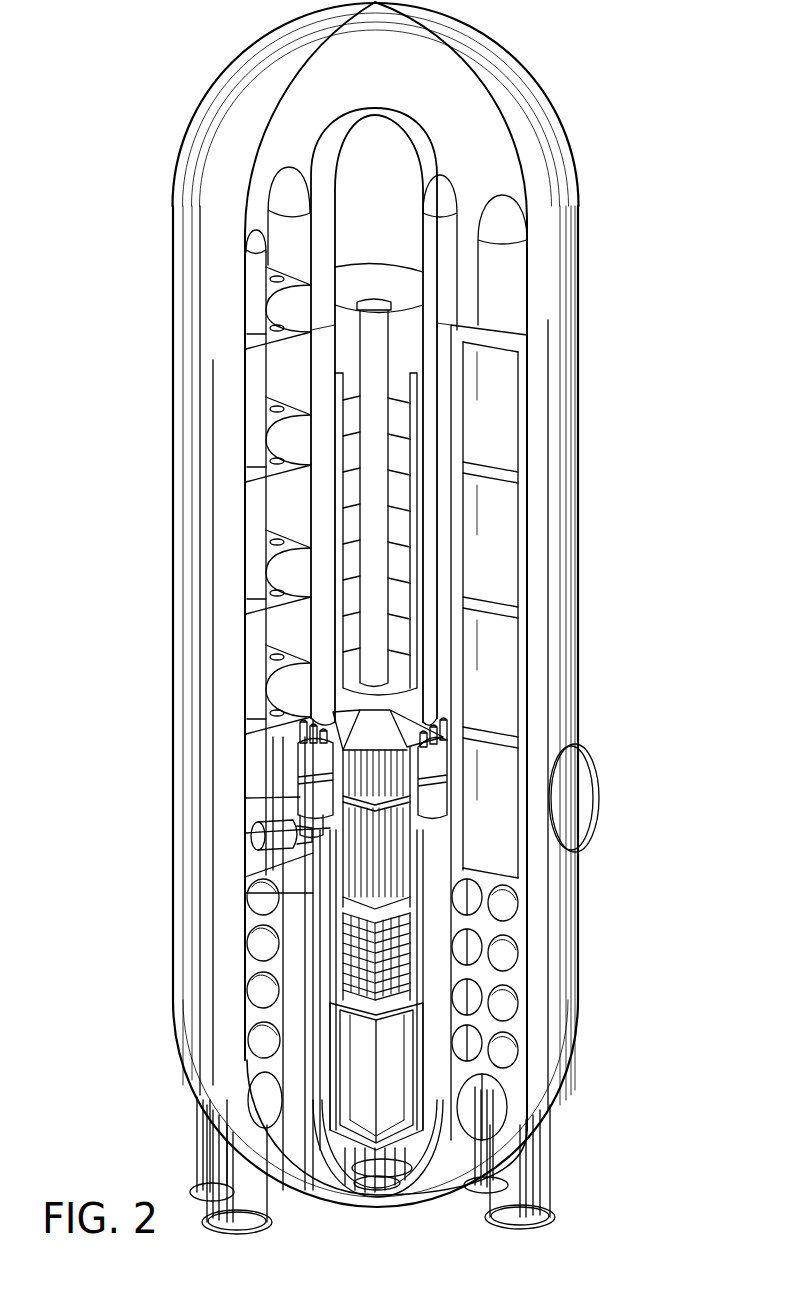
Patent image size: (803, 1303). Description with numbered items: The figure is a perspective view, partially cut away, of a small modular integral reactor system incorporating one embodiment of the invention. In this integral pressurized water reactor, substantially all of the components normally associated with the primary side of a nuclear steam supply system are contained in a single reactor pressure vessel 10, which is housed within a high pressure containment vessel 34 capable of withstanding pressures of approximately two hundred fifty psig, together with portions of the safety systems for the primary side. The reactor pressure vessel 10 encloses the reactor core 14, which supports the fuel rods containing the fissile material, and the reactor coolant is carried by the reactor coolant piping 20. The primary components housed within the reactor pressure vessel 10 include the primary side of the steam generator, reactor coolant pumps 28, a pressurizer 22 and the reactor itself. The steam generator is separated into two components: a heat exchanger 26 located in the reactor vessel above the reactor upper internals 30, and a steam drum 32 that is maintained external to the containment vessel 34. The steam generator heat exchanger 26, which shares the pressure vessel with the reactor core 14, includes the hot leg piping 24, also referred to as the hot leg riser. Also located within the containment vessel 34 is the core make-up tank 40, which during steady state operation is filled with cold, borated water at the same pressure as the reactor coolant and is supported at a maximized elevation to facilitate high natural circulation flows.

The reactor pressure vessel 10 is at (420, 947).
The reactor core 14 is at (393, 1075).
The reactor coolant piping 20 is at (400, 913).
The pressurizer 22 is at (405, 248).
The hot leg piping 24 is at (380, 562).
The steam generator heat exchanger 26 is at (400, 527).
The reactor coolant pump 28 is at (257, 842).
The reactor upper internals 30 is at (342, 966).
The steam drum 32 is at (428, 322).
The containment vessel 34 is at (577, 675).
The core make-up tank 40 is at (290, 307).